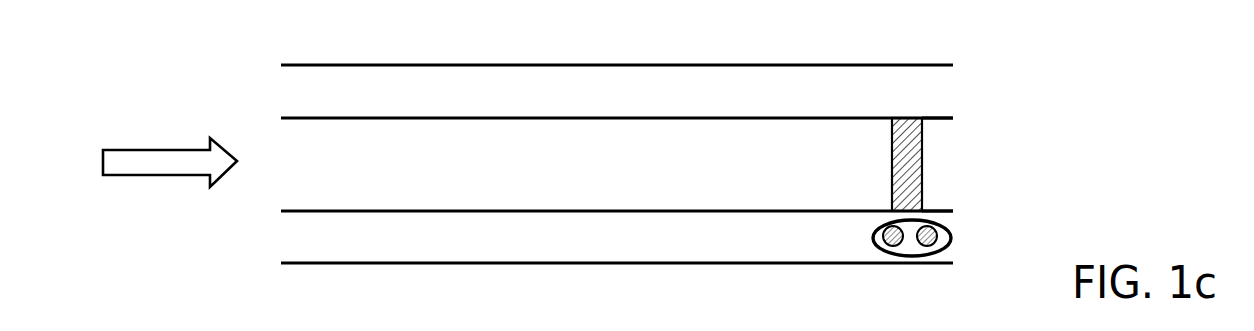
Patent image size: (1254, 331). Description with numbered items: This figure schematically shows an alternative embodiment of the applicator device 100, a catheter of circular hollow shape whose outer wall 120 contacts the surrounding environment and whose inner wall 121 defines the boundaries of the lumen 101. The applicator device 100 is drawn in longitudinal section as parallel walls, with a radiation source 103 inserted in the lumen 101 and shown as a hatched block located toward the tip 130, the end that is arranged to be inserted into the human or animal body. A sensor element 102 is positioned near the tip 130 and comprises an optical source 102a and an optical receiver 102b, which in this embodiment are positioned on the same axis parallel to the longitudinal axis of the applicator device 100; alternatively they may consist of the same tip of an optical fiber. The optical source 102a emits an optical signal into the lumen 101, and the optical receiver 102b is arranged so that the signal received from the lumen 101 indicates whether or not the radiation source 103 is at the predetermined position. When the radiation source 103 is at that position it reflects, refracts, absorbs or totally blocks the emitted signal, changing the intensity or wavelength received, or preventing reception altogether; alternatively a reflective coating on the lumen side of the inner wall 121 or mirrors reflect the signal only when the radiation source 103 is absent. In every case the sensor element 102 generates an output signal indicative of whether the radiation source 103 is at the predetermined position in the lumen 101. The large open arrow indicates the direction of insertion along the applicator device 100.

The applicator device 100 is at (102, 105).
The lumen 101 is at (604, 150).
The sensor element 102 is at (924, 219).
The optical source 102a is at (897, 253).
The optical receiver 102b is at (926, 253).
The radiation source 103 is at (891, 126).
The outer wall 120 is at (349, 63).
The inner wall 121 is at (517, 116).
The tip 130 is at (955, 160).